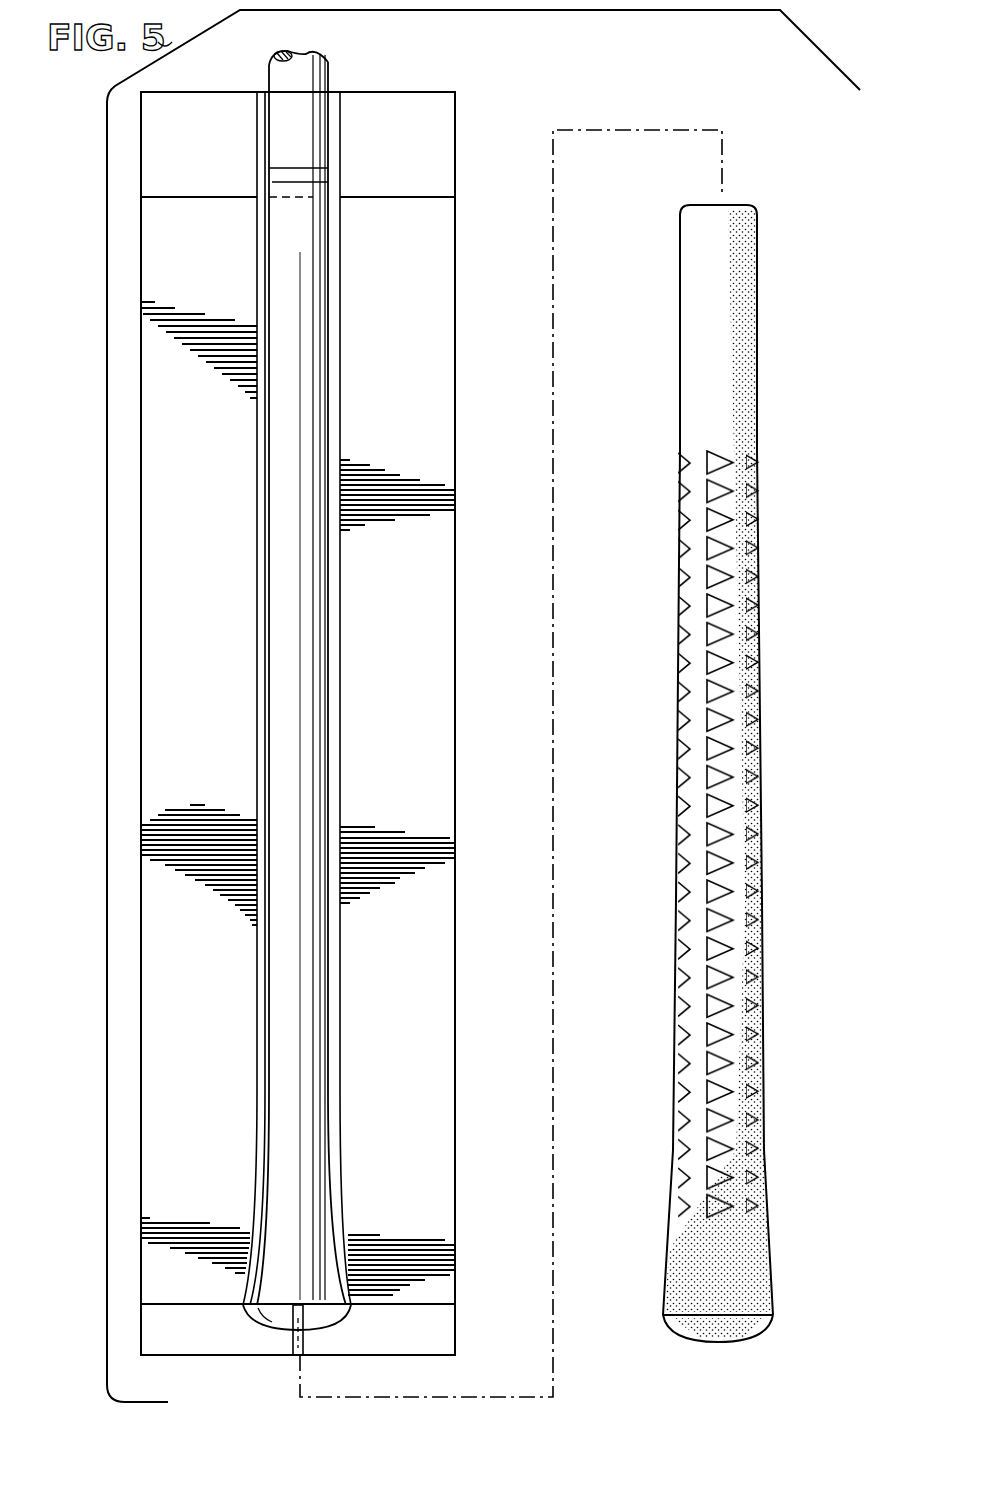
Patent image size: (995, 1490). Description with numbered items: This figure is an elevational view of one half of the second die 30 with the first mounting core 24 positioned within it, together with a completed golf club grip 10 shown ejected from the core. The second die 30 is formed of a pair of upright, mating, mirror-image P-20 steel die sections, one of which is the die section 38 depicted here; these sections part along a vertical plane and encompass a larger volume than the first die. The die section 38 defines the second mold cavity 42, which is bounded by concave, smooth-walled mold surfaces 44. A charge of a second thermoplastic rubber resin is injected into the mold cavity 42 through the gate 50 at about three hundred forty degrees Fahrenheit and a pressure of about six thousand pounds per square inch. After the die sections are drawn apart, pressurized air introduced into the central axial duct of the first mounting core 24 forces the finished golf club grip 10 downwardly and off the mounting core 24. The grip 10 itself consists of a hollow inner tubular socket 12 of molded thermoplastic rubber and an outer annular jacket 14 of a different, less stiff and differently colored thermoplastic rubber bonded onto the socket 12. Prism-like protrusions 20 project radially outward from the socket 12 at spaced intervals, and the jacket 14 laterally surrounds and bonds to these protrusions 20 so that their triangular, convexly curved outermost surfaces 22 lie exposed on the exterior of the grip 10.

The golf club grip 10 is at (785, 306).
The inner tubular socket 12 is at (672, 970).
The outer annular jacket 14 is at (773, 392).
The protrusions 20 is at (703, 607).
The outermost surfaces 22 is at (708, 546).
The first mounting core 24 is at (310, 80).
The second die 30 is at (480, 112).
The die section 38 is at (447, 288).
The second mold cavity 42 is at (337, 1237).
The mold surfaces 44 is at (337, 1012).
The gate 50 is at (305, 1340).